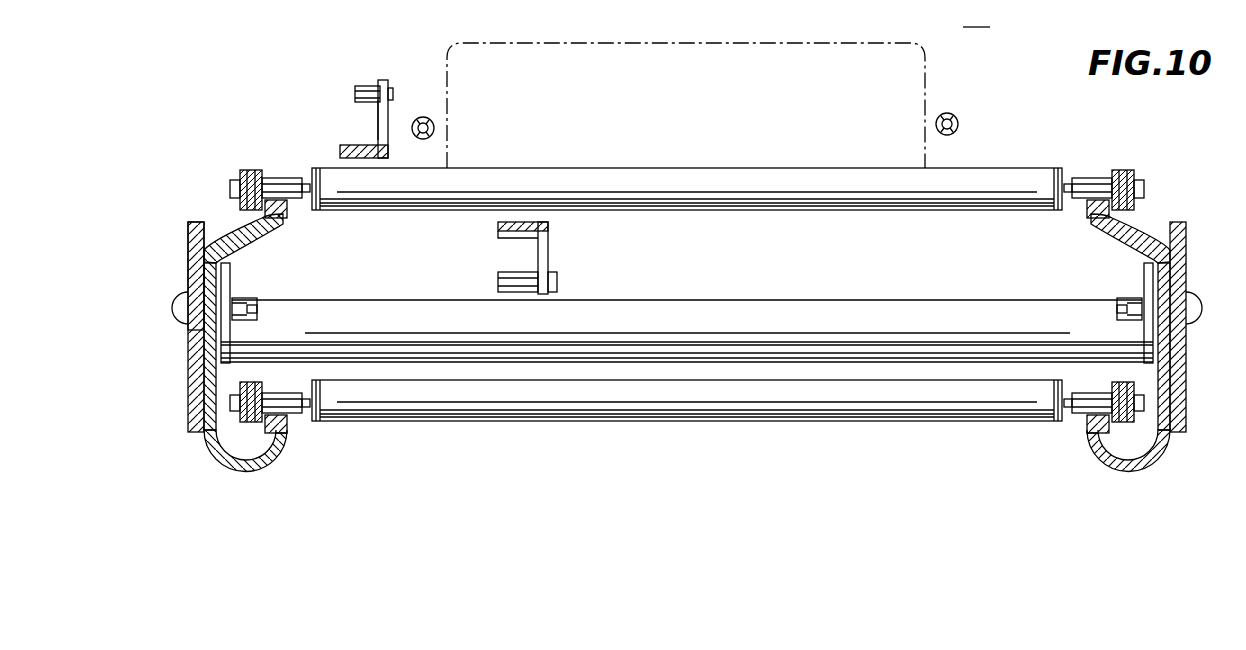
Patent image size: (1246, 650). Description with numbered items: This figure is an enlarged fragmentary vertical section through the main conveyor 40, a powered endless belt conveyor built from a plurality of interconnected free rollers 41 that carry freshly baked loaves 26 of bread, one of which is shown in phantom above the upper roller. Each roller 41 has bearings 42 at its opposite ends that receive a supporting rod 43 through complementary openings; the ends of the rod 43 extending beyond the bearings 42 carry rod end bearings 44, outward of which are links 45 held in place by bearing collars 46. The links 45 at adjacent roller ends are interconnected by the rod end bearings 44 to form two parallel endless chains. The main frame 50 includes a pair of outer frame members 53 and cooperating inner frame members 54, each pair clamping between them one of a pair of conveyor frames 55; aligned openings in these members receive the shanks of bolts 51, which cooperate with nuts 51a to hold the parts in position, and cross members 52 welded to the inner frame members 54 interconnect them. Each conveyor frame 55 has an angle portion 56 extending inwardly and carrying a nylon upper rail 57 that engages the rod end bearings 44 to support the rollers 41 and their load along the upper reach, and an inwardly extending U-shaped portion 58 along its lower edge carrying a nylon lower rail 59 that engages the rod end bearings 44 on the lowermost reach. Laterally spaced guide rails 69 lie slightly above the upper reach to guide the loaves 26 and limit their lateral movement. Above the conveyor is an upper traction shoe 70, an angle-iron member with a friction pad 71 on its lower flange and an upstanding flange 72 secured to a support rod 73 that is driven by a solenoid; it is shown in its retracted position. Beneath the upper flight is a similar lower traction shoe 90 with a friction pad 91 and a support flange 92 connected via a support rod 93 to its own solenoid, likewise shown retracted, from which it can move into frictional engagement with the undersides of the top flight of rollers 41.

The loaves 26 is at (733, 43).
The main conveyor 40 is at (975, 15).
The rollers 41 is at (1012, 168).
The bearings 42 is at (314, 418).
The supporting rod 43 is at (306, 196).
The rod end bearings 44 is at (288, 394).
The links 45 is at (249, 168).
The bearing collars 46 is at (250, 423).
The main frame 50 is at (178, 254).
The bolts 51 is at (172, 309).
The nuts 51a is at (250, 303).
The cross members 52 is at (822, 299).
The outer frame members 53 is at (195, 222).
The inner frame members 54 is at (230, 282).
The conveyor frames 55 is at (200, 348).
The angle portion 56 is at (250, 243).
The upper rail 57 is at (284, 226).
The U-shaped portions 58 is at (240, 470).
The lower rails 59 is at (282, 436).
The guide rails 69 is at (424, 116).
The upper traction shoe 70 is at (366, 145).
The friction pad 71 is at (340, 152).
The flange 72 is at (378, 114).
The support rod 73 is at (368, 86).
The lower traction shoe 90 is at (504, 238).
The friction pad 91 is at (498, 226).
The support flange 92 is at (550, 256).
The support rod 93 is at (498, 286).